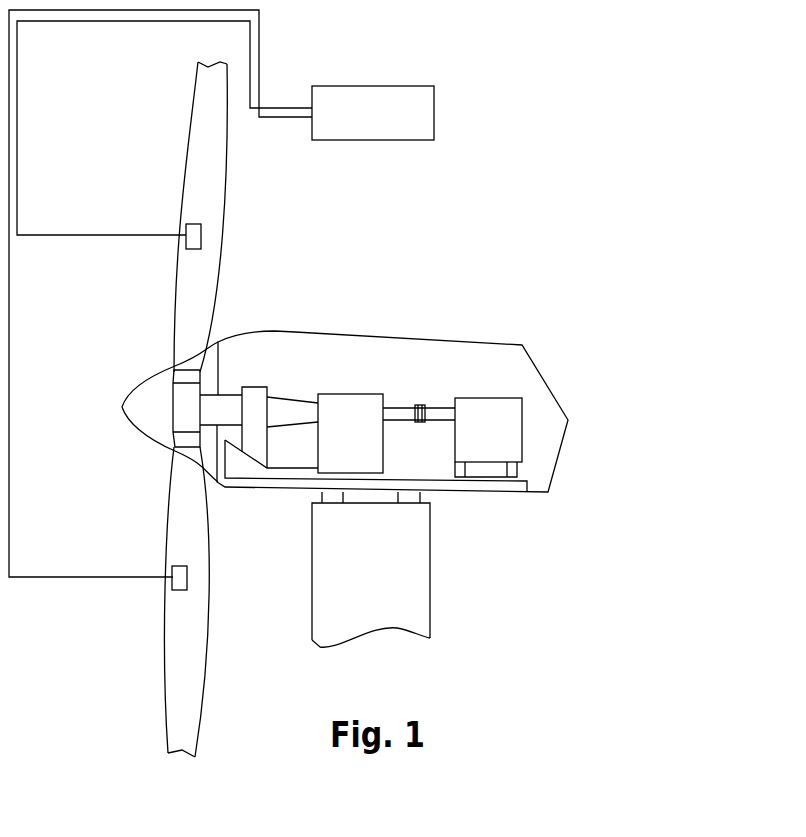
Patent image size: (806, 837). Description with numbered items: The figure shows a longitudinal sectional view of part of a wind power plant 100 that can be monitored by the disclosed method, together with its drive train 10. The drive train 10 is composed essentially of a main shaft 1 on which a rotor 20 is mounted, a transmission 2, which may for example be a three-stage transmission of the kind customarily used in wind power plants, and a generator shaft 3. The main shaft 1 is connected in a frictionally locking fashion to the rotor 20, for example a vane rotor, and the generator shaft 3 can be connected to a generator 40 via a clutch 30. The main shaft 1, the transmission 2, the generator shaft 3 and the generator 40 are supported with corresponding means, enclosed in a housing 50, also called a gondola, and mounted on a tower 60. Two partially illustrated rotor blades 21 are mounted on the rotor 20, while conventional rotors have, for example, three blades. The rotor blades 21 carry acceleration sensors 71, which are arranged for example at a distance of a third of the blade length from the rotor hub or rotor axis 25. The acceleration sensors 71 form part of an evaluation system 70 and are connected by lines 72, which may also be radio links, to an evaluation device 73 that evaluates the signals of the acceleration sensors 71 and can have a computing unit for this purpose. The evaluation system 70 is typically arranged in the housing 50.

The main shaft 1 is at (228, 395).
The transmission 2 is at (332, 394).
The generator shaft 3 is at (400, 408).
The drive train 10 is at (534, 417).
The rotor 20 is at (173, 397).
The rotor blades 21 is at (184, 175).
The rotor hub or rotor axis 25 is at (122, 407).
The clutch 30 is at (423, 396).
The generator 40 is at (495, 398).
The housing 50 is at (295, 332).
The tower 60 is at (430, 560).
The evaluation system 70 is at (412, 40).
The acceleration sensors 71 is at (186, 249).
The signal line 72 is at (250, 40).
The evaluation device 73 is at (434, 113).
The wind power plant 100 is at (397, 256).